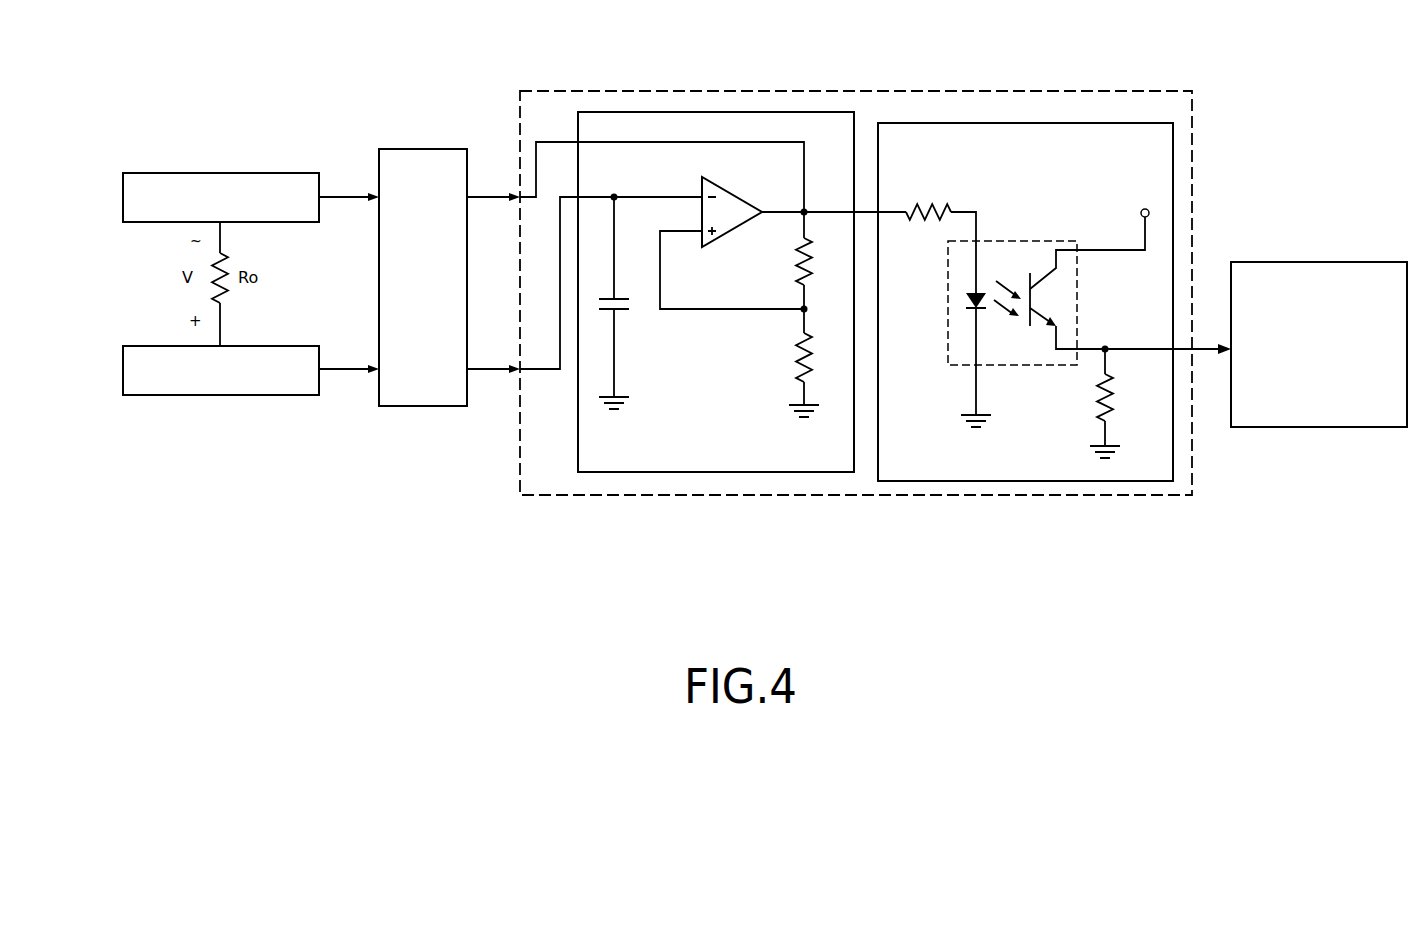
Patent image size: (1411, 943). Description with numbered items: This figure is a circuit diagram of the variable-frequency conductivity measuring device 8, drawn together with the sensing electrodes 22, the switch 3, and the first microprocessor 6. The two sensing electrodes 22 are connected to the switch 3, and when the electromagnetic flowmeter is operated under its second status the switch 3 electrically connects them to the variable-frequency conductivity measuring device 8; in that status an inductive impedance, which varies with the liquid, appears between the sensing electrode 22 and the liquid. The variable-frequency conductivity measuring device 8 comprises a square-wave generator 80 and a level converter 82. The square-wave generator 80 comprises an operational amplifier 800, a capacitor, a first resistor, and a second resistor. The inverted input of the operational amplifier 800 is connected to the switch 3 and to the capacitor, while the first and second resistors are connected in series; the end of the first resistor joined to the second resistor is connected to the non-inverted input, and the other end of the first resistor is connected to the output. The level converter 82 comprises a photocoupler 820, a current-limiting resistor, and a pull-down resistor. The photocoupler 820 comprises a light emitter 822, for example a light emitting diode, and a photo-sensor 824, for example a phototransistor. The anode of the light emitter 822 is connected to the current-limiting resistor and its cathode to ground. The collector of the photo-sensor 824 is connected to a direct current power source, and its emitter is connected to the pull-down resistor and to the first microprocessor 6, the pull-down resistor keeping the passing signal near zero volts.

The sensing electrode 22 is at (307, 182).
The switch 3 is at (415, 395).
The variable-frequency conductivity measuring device 8 is at (898, 102).
The square-wave generator 80 is at (710, 128).
The operational amplifier 800 is at (743, 232).
The level converter 82 is at (1040, 126).
The photocoupler 820 is at (1017, 250).
The light emitter 822 is at (955, 318).
The photo-sensor 824 is at (1023, 337).
The first microprocessor 6 is at (1287, 280).